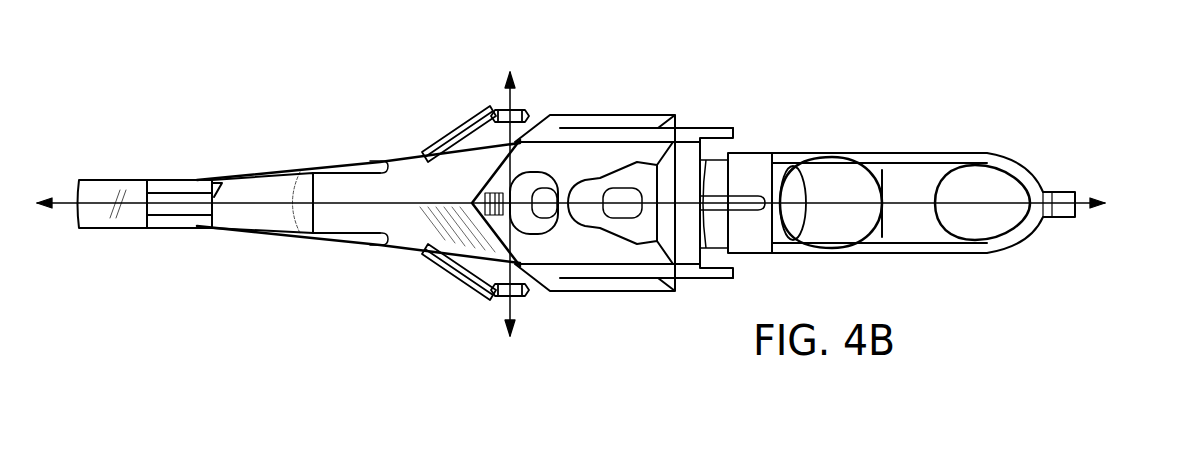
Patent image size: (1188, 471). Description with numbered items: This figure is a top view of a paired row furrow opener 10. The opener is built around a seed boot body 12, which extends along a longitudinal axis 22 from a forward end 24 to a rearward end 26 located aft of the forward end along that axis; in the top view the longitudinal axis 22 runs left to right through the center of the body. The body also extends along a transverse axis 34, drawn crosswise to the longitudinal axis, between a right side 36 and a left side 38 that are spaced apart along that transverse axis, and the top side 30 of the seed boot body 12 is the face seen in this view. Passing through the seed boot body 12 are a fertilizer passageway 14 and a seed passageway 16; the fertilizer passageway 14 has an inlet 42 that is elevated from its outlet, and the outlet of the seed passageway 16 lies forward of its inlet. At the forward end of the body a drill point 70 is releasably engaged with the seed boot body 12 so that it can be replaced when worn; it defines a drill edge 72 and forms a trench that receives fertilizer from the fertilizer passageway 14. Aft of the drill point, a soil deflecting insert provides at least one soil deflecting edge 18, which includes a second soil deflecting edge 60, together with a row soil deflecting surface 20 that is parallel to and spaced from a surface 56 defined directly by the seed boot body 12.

The paired row furrow opener 10 is at (192, 68).
The seed boot body 12 is at (363, 102).
The fertilizer passageway 14 is at (812, 165).
The seed passageway 16 is at (988, 180).
The soil deflecting edge 18 is at (440, 272).
The row soil deflecting surface 20 is at (475, 283).
The longitudinal axis 22 is at (215, 180).
The forward end 24 is at (195, 262).
The rearward end 26 is at (1057, 177).
The top side 30 is at (645, 80).
The transverse axis 34 is at (513, 108).
The right side 36 is at (283, 318).
The left side 38 is at (297, 122).
The inlet 42 is at (855, 155).
The surface 56 is at (500, 273).
The second soil deflecting edge 60 is at (518, 298).
The drill point 70 is at (105, 215).
The drill edge 72 is at (78, 203).